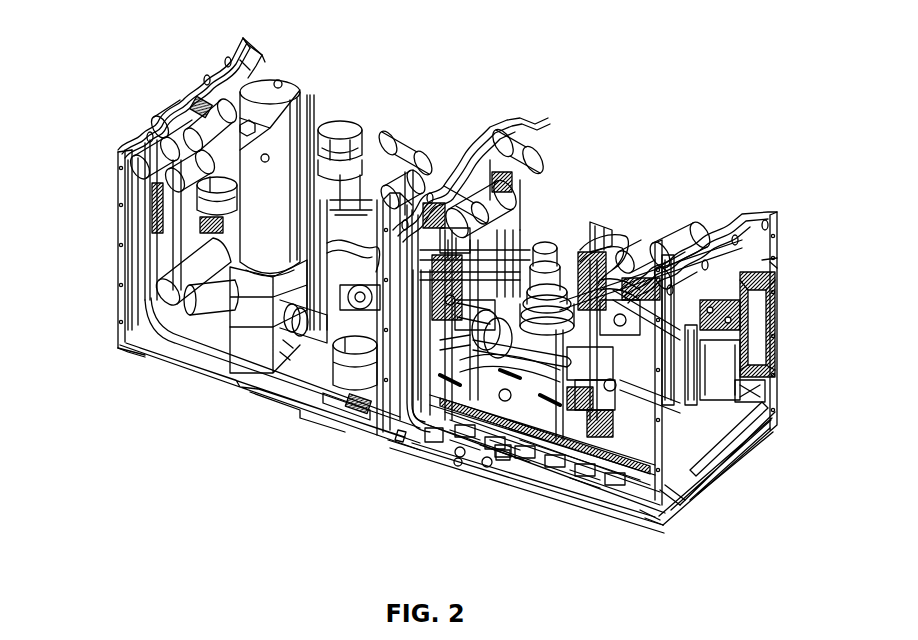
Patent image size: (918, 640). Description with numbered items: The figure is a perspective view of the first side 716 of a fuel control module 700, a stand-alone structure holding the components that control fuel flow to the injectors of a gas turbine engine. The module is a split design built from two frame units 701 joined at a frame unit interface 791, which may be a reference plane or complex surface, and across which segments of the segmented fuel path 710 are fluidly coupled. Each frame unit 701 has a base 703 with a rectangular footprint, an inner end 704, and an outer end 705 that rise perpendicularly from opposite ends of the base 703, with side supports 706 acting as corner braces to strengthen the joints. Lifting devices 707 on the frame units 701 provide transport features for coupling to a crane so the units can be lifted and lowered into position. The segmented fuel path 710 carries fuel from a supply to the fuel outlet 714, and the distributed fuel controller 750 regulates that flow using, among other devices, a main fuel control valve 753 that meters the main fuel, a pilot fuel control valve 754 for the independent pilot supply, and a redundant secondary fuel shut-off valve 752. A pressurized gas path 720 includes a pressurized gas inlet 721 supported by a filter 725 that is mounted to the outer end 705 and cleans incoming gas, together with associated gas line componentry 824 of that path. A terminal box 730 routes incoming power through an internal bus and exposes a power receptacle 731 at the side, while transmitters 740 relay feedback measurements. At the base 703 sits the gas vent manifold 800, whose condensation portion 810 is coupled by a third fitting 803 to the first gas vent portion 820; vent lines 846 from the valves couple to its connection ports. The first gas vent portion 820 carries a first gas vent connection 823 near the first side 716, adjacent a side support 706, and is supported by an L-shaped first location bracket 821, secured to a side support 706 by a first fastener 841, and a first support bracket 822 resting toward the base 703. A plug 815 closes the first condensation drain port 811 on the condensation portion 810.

The fuel control module 700 is at (706, 46).
The frame unit 701 is at (118, 287).
The base 703 is at (150, 360).
The inner end 704 is at (358, 420).
The outer end 705 is at (125, 218).
The side support 706 is at (190, 355).
The lifting device 707 is at (233, 60).
The segmented fuel path 710 is at (122, 342).
The fuel outlet 714 is at (248, 74).
The first side 716 is at (286, 441).
The pressurized gas path 720 is at (762, 382).
The pressurized gas inlet 721 is at (783, 300).
The filter 725 is at (780, 330).
The terminal box 730 is at (317, 233).
The power receptacle 731 is at (310, 248).
The transmitter 740 is at (396, 145).
The distributed fuel controller 750 is at (354, 111).
The secondary fuel shut-off valve 752 is at (548, 243).
The main fuel control valve 753 is at (295, 82).
The pilot fuel control valve 754 is at (305, 140).
The frame unit interface 791 is at (385, 444).
The gas vent manifold 800 is at (562, 482).
The third fitting 803 is at (427, 438).
The condensation portion 810 is at (500, 462).
The first condensation drain port 811 is at (466, 462).
The plug 815 is at (500, 458).
The first gas vent portion 820 is at (458, 455).
The first location bracket 821 is at (455, 466).
The first support bracket 822 is at (584, 482).
The first gas vent connection 823 is at (658, 522).
The hose 824 is at (627, 235).
The first fastener 841 is at (487, 470).
The vent line 846 is at (643, 207).